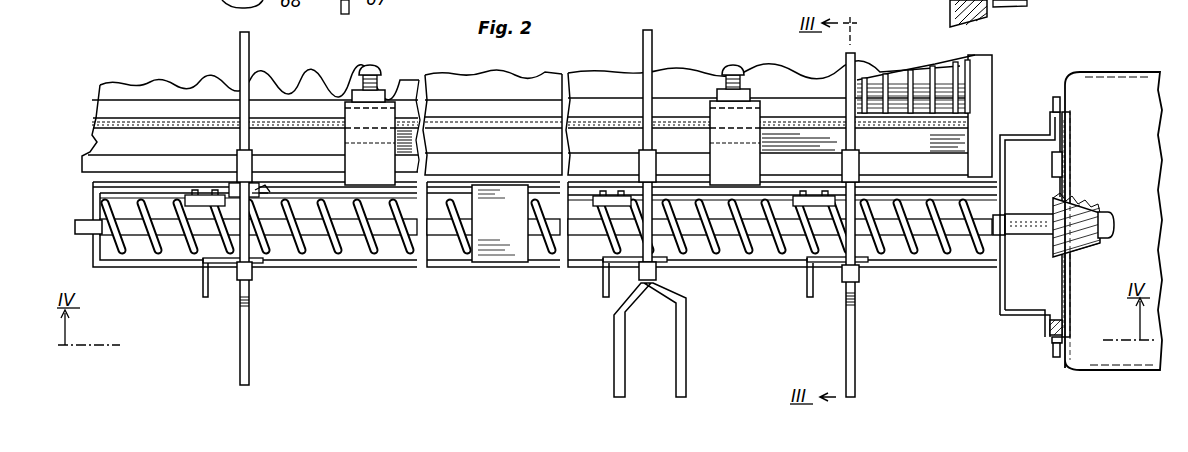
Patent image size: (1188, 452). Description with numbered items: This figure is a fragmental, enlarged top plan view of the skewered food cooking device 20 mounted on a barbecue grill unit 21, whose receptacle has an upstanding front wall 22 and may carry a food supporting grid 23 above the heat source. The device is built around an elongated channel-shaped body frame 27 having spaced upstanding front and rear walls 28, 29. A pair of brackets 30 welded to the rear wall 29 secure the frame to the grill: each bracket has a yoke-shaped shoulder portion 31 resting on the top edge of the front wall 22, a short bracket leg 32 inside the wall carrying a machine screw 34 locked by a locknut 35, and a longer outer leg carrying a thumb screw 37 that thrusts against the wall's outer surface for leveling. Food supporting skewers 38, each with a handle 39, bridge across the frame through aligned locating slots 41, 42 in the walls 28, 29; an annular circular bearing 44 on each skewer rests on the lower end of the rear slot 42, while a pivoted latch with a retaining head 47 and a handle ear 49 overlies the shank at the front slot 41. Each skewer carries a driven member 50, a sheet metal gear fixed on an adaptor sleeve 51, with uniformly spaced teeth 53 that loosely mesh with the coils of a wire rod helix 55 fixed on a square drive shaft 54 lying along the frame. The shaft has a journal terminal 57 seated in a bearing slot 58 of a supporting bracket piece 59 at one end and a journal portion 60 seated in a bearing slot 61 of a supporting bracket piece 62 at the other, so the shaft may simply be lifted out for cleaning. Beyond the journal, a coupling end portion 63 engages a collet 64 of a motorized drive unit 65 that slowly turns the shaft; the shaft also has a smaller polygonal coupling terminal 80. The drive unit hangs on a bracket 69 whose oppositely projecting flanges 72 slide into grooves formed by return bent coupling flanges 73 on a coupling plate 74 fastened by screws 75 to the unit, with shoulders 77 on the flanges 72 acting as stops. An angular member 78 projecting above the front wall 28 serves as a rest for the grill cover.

The skewered food cooking device 20 is at (88, 167).
The grill unit 21 is at (993, 95).
The front wall 22 is at (933, 163).
The food supporting grid 23 is at (975, 68).
The body frame 27 is at (405, 262).
The front wall 28 is at (548, 262).
The rear wall 29 is at (410, 184).
The brackets 30 is at (345, 167).
The shoulder portion 31 is at (378, 150).
The bracket leg 32 is at (350, 96).
The machine screw 34 is at (372, 68).
The locknut 35 is at (365, 92).
The thumb screw 37 is at (883, 8).
The food supporting skewers 38 is at (645, 52).
The handle 39 is at (250, 333).
The locating slots 41 is at (234, 267).
The locating slots 42 is at (265, 190).
The annular circular bearing 44 is at (258, 193).
The retaining head 47 is at (262, 265).
The handle ear 49 is at (203, 281).
The driven member 50 is at (205, 195).
The adaptor sleeve 51 is at (239, 168).
The teeth 53 is at (291, 195).
The drive shaft 54 is at (957, 232).
The helix 55 is at (730, 255).
The journal terminal 57 is at (87, 222).
The bearing slot 58 is at (95, 237).
The supporting bracket piece 59 is at (100, 182).
The journal portion 60 is at (1005, 218).
The bearing slot 61 is at (990, 195).
The supporting bracket piece 62 is at (1000, 248).
The coupling end portion 63 is at (1040, 236).
The collet 64 is at (1085, 205).
The motorized drive unit 65 is at (1130, 72).
The bracket 69 is at (1013, 135).
The flanges 72 is at (1063, 320).
The coupling flanges 73 is at (1051, 343).
The coupling plate 74 is at (1071, 148).
The screws 75 is at (1068, 170).
The shoulders 77 is at (1056, 97).
The angular member 78 is at (522, 183).
The coupling terminal 80 is at (1114, 225).